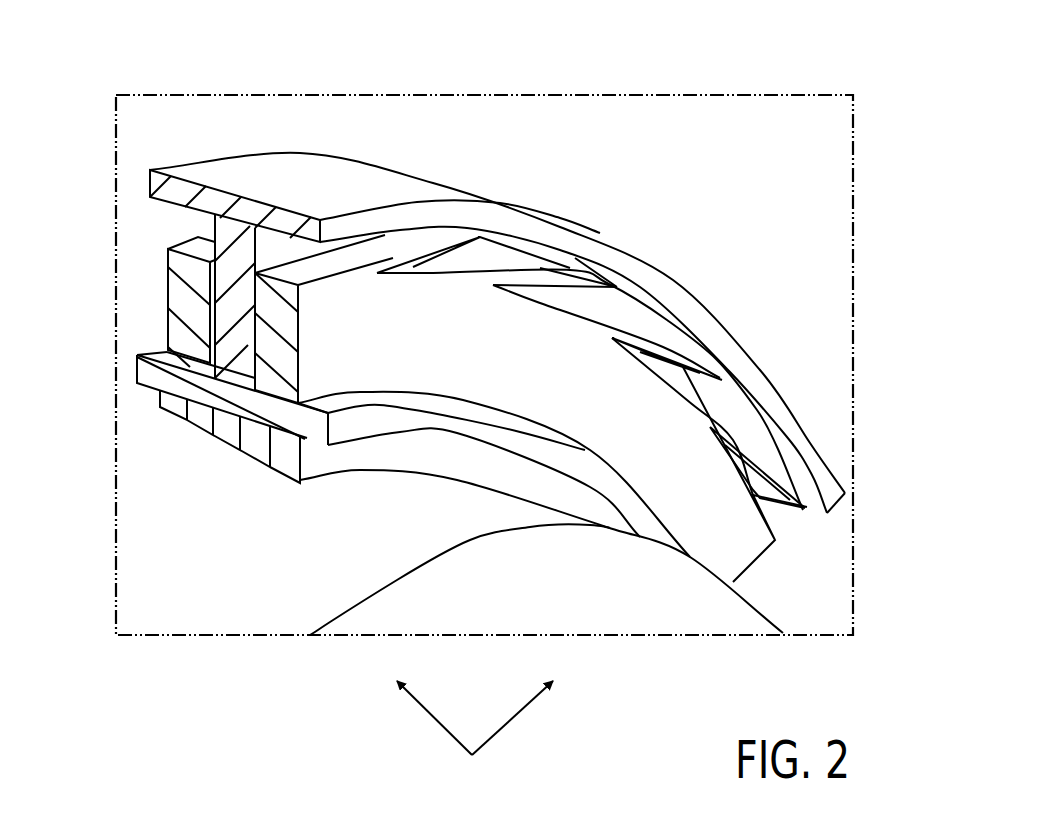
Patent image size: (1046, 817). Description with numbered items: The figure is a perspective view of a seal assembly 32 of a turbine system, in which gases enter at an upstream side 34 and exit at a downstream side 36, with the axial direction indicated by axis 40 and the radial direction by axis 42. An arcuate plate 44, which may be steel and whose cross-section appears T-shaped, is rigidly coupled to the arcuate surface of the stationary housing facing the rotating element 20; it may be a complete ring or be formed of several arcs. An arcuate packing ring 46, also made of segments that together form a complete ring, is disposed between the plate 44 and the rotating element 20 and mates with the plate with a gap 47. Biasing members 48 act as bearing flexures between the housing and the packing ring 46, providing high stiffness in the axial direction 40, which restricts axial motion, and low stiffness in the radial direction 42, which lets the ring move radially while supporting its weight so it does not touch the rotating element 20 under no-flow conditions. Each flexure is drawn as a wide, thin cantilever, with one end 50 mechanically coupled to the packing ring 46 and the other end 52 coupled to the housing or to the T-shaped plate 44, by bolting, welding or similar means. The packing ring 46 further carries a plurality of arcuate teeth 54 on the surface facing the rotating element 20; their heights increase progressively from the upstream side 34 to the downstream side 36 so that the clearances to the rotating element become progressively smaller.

The rotating element 20 is at (590, 607).
The seal assembly 32 is at (622, 62).
The upstream side 34 is at (149, 333).
The downstream side 36 is at (799, 591).
The axial direction axis 40 is at (440, 725).
The radial direction axis 42 is at (510, 725).
The arcuate plate 44 is at (240, 246).
The arcuate packing ring 46 is at (187, 380).
The gap 47 is at (236, 372).
The biasing members 48 is at (397, 262).
The flexure end 50 is at (300, 286).
The flexure end 52 is at (480, 238).
The arcuate teeth 54 is at (297, 472).